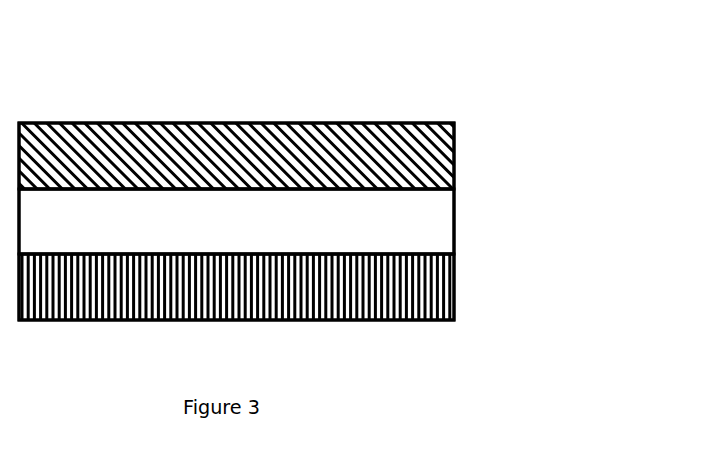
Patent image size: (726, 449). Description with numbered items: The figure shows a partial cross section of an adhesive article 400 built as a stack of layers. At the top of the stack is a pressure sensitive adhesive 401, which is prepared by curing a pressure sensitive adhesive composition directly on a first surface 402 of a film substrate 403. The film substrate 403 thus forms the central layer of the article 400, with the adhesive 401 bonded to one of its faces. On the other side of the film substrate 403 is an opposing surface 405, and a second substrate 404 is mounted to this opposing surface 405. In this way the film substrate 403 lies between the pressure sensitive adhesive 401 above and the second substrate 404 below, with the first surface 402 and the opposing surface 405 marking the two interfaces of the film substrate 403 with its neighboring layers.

The adhesive article 400 is at (235, 80).
The pressure sensitive adhesive 401 is at (464, 135).
The first surface 402 is at (464, 186).
The film substrate 403 is at (464, 224).
The second substrate 404 is at (464, 290).
The opposing surface 405 is at (464, 253).